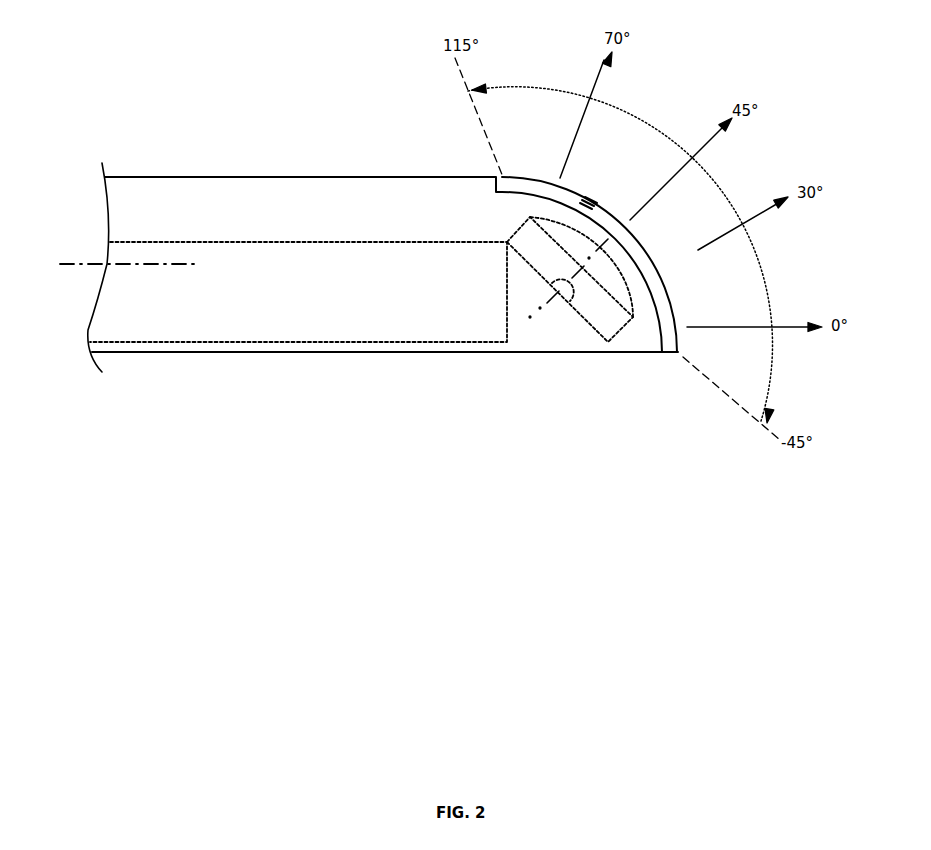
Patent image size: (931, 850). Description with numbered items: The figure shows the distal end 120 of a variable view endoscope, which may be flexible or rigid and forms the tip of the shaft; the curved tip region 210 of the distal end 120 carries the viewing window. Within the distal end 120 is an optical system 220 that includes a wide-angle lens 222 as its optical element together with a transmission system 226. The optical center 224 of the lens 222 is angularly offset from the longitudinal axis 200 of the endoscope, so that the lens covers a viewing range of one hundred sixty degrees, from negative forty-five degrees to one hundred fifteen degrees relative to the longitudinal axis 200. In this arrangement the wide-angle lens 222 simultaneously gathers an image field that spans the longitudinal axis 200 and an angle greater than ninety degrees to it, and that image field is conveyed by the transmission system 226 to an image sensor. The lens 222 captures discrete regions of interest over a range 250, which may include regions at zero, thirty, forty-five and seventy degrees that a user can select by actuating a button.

The distal end 120 is at (449, 175).
The longitudinal axis 200 is at (75, 265).
The curved distal section 210 is at (522, 178).
The optical system 220 is at (403, 197).
The wide-angle lens 222 is at (608, 312).
The optical center 224 is at (540, 310).
The transmission system 226 is at (287, 241).
The range 250 is at (767, 280).